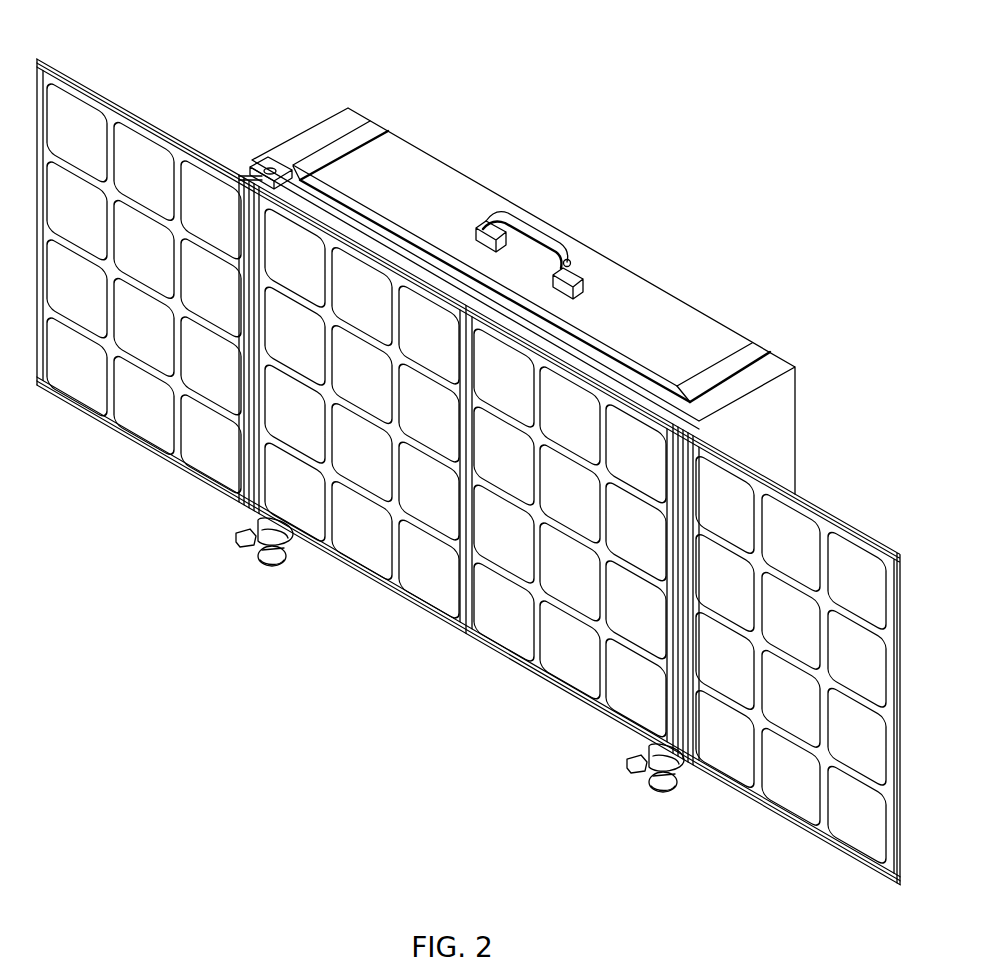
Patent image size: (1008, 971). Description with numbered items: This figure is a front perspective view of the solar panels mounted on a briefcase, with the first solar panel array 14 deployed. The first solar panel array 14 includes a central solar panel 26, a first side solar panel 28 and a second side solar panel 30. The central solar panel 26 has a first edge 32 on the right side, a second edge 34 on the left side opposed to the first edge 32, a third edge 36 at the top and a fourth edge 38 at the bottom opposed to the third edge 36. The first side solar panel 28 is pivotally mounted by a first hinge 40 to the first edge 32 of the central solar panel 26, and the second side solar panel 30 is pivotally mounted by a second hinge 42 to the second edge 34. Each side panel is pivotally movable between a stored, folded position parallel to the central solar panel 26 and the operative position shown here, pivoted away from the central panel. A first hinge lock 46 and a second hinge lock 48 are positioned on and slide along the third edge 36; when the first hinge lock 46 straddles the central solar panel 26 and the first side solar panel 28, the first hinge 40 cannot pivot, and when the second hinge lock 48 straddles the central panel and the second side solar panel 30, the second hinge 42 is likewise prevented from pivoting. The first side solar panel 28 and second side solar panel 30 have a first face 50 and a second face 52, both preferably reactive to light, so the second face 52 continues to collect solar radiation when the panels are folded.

The first solar panel array 14 is at (466, 468).
The central solar panel 26 is at (508, 536).
The first side solar panel 28 is at (792, 852).
The second side solar panel 30 is at (142, 476).
The first edge 32 is at (668, 739).
The second edge 34 is at (250, 499).
The third edge 36 is at (434, 284).
The fourth edge 38 is at (446, 623).
The first hinge 40 is at (682, 483).
The second hinge 42 is at (246, 245).
The first hinge lock 46 is at (706, 430).
The second hinge lock 48 is at (243, 170).
The first face 50 is at (135, 326).
The second face 52 is at (84, 71).